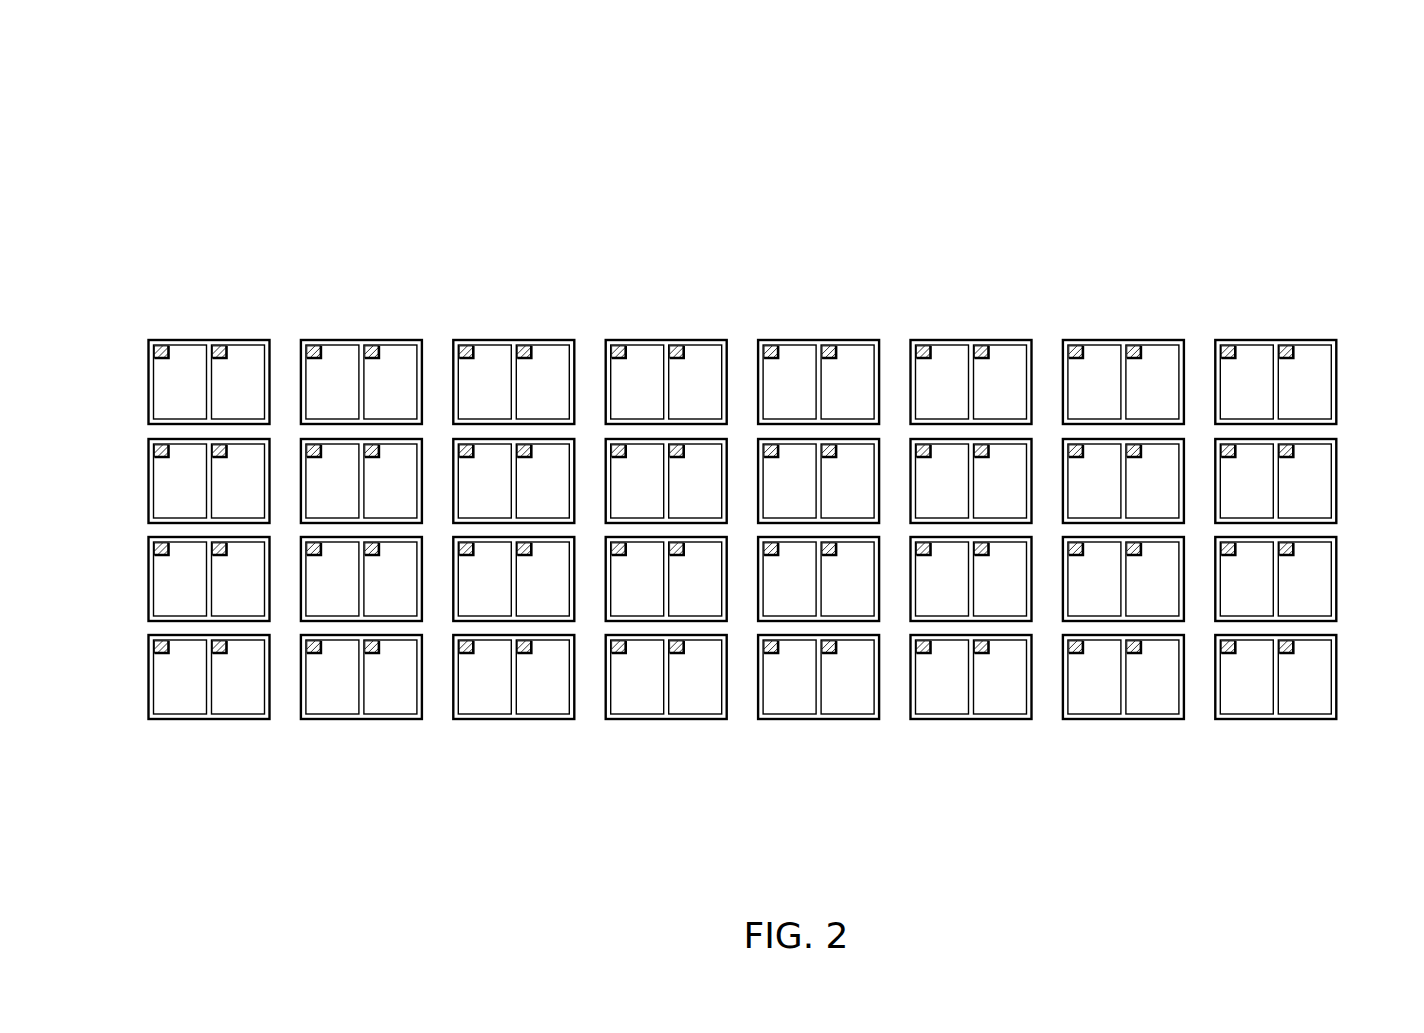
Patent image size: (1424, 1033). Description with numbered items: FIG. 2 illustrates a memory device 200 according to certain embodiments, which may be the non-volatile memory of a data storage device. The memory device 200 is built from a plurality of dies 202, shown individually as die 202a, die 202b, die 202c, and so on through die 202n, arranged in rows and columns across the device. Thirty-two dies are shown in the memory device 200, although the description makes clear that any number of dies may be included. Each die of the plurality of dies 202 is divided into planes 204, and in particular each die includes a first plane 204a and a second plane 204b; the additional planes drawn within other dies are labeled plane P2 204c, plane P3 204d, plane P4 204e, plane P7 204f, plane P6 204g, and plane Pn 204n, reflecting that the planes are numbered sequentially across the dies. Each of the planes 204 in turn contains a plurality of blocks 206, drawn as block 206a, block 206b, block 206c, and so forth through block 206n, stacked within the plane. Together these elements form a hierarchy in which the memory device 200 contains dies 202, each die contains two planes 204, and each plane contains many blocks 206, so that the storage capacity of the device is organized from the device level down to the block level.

The memory device 200 is at (174, 68).
The dies 202 is at (468, 338).
The die 202a is at (148, 384).
The die 202b is at (148, 480).
The die 202c is at (148, 578).
The die 202n is at (148, 678).
The planes 204 is at (349, 398).
The first plane 204a is at (156, 409).
The second plane 204b is at (214, 409).
The plane P2 204c is at (156, 508).
The plane P3 204d is at (214, 508).
The plane P4 204e is at (156, 606).
The plane P7 204f is at (214, 606).
The plane P6 204g is at (156, 704).
The plane Pn 204n is at (214, 704).
The blocks 206 is at (525, 340).
The block 206a is at (160, 340).
The block 206b is at (220, 340).
The block 206c is at (313, 340).
The block 206n is at (375, 340).